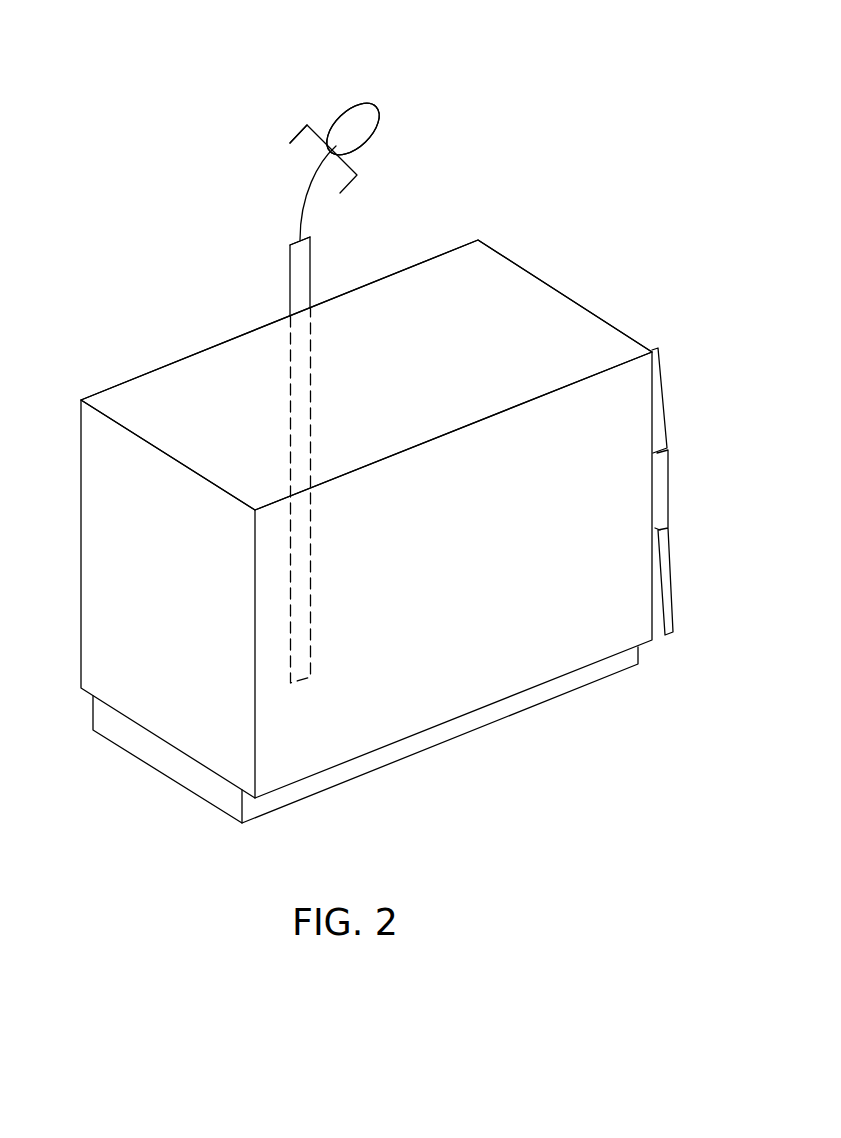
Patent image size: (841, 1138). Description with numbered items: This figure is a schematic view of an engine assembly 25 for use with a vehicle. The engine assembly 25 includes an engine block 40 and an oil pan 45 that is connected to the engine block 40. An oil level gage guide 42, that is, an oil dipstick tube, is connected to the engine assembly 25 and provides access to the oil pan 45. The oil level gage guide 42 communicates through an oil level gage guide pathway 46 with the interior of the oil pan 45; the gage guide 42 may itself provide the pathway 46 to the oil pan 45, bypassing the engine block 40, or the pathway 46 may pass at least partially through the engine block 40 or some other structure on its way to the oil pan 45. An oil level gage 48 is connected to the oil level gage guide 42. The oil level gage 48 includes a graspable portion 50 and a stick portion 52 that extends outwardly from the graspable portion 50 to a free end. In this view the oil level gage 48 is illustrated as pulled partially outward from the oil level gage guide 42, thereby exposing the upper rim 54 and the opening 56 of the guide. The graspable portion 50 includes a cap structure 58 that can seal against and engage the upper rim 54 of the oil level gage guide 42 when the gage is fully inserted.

The engine assembly 25 is at (105, 360).
The engine block 40 is at (487, 265).
The oil level gage guide 42 is at (282, 280).
The oil pan 45 is at (168, 780).
The oil level gage guide pathway 46 is at (312, 402).
The oil level gage 48 is at (368, 100).
The graspable portion 50 is at (375, 116).
The stick portion 52 is at (310, 182).
The upper rim 54 is at (320, 238).
The opening 56 is at (300, 238).
The cap structure 58 is at (303, 127).